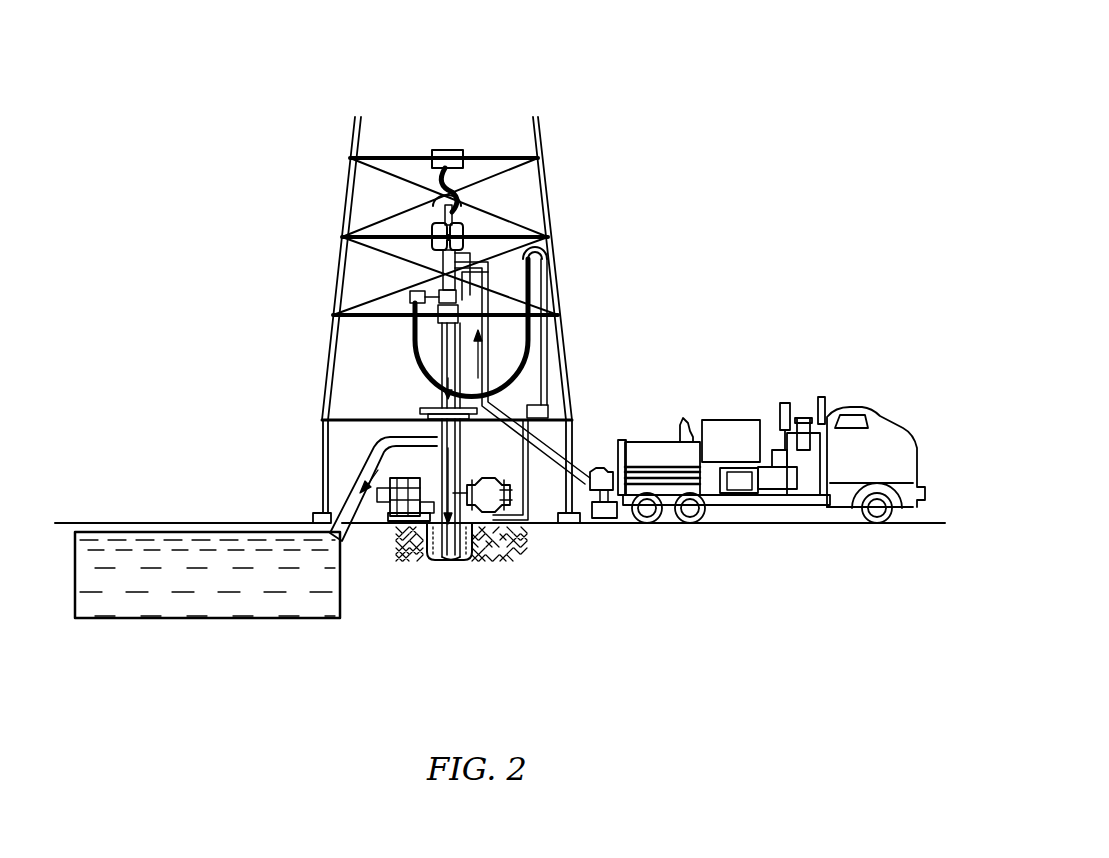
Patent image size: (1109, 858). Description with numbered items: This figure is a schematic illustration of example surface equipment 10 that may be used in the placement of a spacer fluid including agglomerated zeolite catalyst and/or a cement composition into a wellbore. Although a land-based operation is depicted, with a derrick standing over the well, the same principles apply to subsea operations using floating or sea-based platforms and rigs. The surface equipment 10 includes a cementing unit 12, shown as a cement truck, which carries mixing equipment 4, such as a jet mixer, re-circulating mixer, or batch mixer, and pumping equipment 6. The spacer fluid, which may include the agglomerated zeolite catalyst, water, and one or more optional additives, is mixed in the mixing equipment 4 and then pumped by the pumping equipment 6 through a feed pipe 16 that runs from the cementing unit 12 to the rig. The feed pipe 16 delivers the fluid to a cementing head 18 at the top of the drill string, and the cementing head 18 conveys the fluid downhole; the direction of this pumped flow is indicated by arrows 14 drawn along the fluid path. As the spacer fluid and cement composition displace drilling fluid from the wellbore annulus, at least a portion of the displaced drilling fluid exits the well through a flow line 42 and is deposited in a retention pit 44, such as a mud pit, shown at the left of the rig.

The surface equipment 10 is at (790, 163).
The cementing head 18 is at (478, 229).
The arrows 14 is at (440, 350).
The feed pipe 16 is at (541, 437).
The flow line 42 is at (358, 517).
The retention pit 44 is at (128, 620).
The pumping equipment 6 is at (603, 486).
The mixing equipment 4 is at (737, 488).
The cementing unit 12 is at (811, 506).